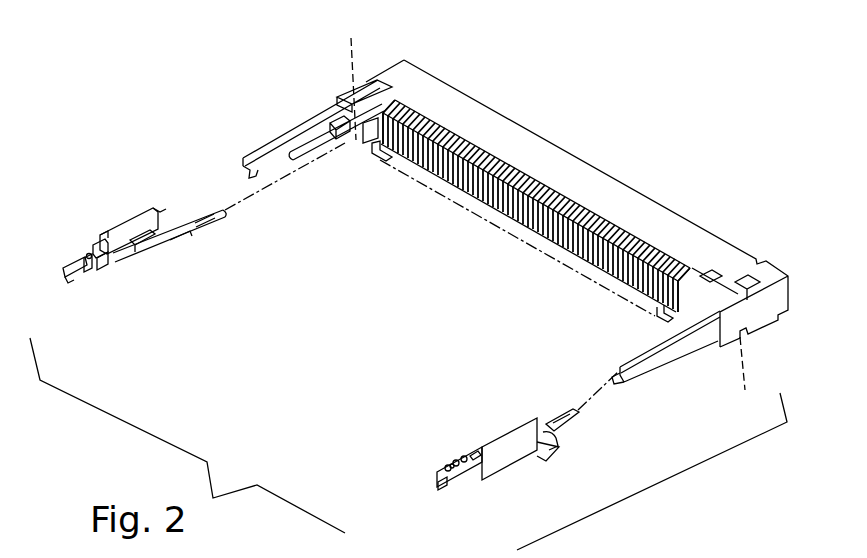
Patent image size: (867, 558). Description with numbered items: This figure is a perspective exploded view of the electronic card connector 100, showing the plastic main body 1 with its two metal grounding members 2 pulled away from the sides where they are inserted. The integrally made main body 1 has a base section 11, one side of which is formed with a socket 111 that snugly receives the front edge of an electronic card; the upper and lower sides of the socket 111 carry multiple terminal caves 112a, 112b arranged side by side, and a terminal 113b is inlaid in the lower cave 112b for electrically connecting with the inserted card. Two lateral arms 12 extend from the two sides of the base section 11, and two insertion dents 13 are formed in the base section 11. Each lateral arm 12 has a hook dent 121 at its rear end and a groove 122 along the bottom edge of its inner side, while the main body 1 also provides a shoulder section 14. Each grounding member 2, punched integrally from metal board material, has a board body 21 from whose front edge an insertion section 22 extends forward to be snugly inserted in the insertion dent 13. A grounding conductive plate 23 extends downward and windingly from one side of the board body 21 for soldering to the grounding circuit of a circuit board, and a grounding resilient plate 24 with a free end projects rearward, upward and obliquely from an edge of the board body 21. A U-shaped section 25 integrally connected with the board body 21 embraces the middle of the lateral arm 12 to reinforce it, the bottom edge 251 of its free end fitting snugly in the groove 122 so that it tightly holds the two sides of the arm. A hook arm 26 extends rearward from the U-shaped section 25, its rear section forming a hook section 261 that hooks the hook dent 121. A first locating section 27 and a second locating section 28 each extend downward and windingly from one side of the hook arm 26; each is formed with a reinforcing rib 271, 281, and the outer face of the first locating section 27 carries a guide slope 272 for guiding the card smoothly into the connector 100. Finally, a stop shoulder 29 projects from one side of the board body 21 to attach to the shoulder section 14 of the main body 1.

The electronic card connector 100 is at (577, 98).
The plastic main body 1 is at (591, 168).
The base section 11 is at (622, 185).
The socket 111 is at (427, 117).
The terminal cave 112a is at (647, 237).
The terminal cave 112b is at (507, 207).
The terminal 113b is at (370, 158).
The shoulder section 14 is at (358, 128).
The lateral arm 12 is at (288, 140).
The hook dent 121 is at (247, 167).
The groove 122 is at (334, 122).
The insertion dent 13 is at (548, 214).
The grounding member 2 is at (151, 201).
The board body 21 is at (190, 228).
The insertion section 22 is at (224, 213).
The grounding conductive plate 23 is at (556, 450).
The grounding resilient plate 24 is at (165, 252).
The U-shaped section 25 is at (126, 232).
The bottom edge 251 is at (160, 238).
The hook arm 26 is at (78, 277).
The hook section 261 is at (63, 270).
The first locating section 27 is at (110, 265).
The reinforcing rib 271 is at (98, 245).
The guide slope 272 is at (106, 234).
The second locating section 28 is at (92, 268).
The reinforcing rib 281 is at (88, 256).
The stop shoulder 29 is at (183, 248).